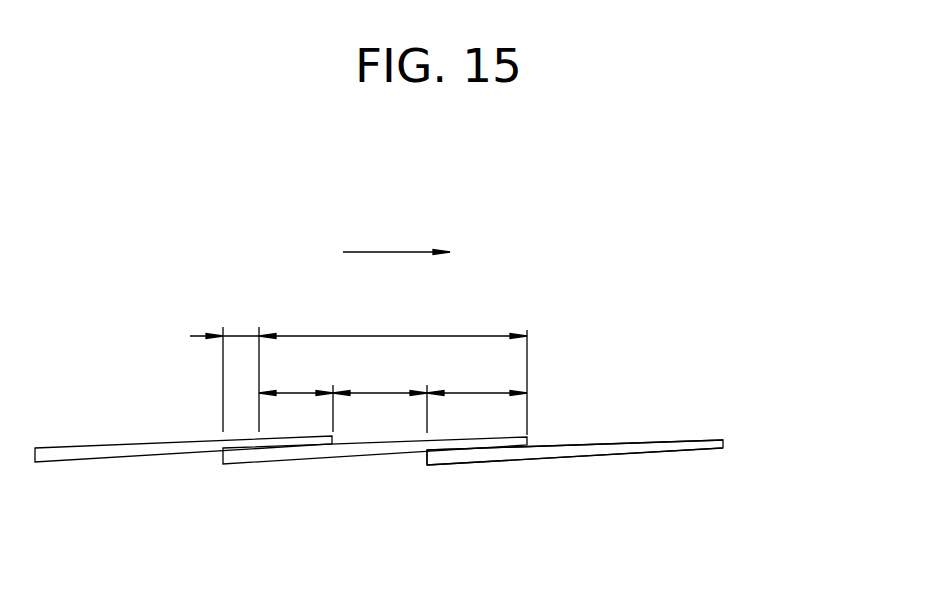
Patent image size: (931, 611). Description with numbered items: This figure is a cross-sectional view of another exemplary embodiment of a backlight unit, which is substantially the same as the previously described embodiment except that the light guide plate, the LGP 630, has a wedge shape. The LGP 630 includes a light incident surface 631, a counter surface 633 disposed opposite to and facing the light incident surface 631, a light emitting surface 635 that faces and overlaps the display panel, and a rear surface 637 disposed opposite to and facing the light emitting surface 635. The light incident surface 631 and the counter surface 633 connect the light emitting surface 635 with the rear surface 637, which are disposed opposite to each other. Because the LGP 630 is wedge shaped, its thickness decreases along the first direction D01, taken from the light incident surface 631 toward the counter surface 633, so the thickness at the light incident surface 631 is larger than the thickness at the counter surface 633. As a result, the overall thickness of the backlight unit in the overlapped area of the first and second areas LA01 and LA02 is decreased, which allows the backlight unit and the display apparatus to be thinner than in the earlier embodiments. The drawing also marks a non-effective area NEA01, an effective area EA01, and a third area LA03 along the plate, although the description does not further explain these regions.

The LGP 630 is at (447, 465).
The light incident surface 631 is at (427, 463).
The counter surface 633 is at (723, 444).
The light emitting surface 635 is at (697, 440).
The rear surface 637 is at (697, 448).
The non-effective area NEA01 is at (233, 320).
The effective area EA01 is at (393, 321).
The first area LA01 is at (296, 378).
The second area LA02 is at (477, 378).
The third length area LA03 is at (380, 378).
The first direction D01 is at (420, 255).